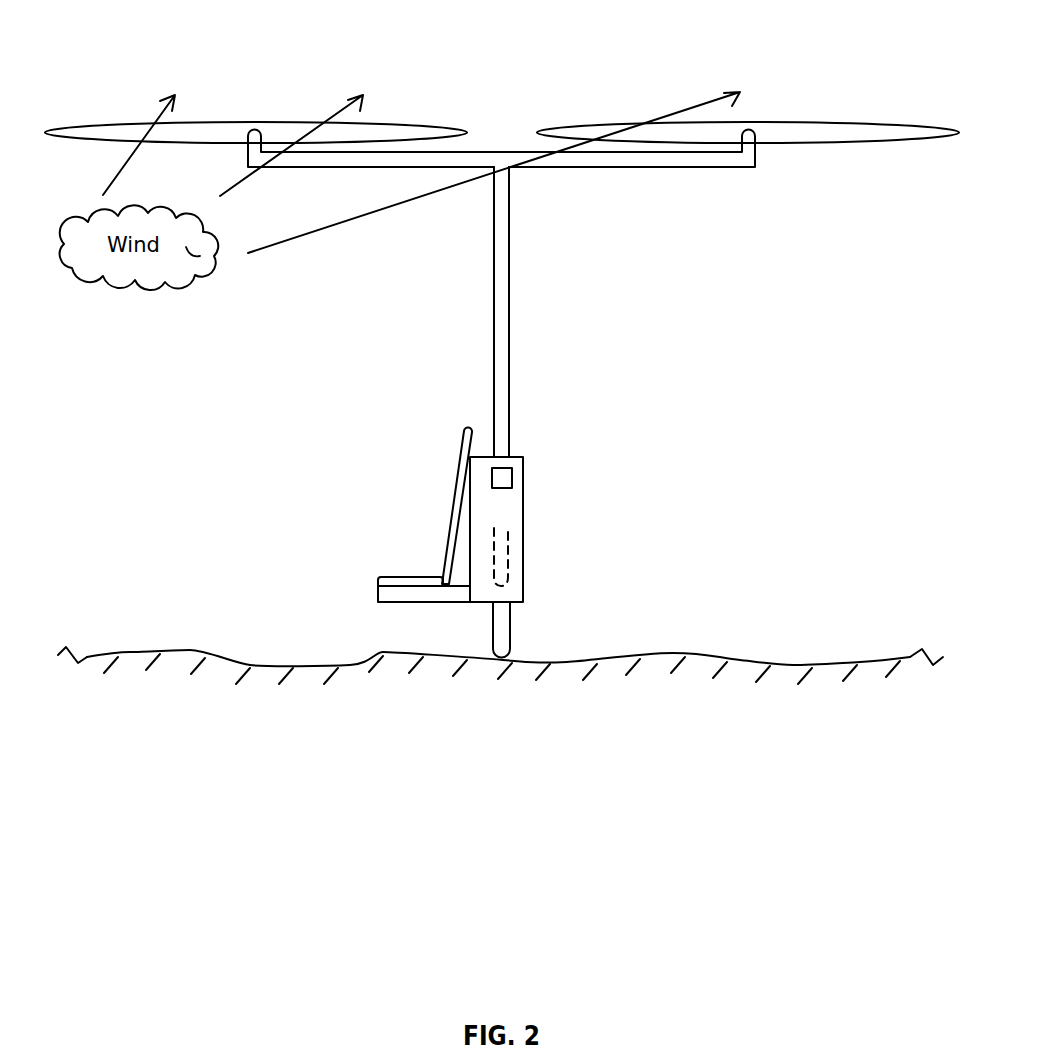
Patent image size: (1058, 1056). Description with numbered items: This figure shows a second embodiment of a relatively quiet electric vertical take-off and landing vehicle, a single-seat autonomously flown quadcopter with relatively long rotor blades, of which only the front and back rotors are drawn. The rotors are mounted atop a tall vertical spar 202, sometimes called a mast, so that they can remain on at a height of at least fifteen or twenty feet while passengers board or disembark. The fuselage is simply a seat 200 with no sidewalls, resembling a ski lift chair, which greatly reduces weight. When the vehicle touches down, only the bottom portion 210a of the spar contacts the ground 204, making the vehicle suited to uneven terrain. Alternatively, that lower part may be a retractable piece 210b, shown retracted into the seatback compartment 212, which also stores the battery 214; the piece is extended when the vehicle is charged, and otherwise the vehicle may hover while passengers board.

The seat 200 is at (470, 428).
The vertical spar 202 is at (511, 303).
The ground 204 is at (153, 650).
The portion of the vehicle touching the ground 210a is at (510, 637).
The retractable piece 210b is at (508, 565).
The seatback compartment 212 is at (523, 517).
The battery 214 is at (512, 482).